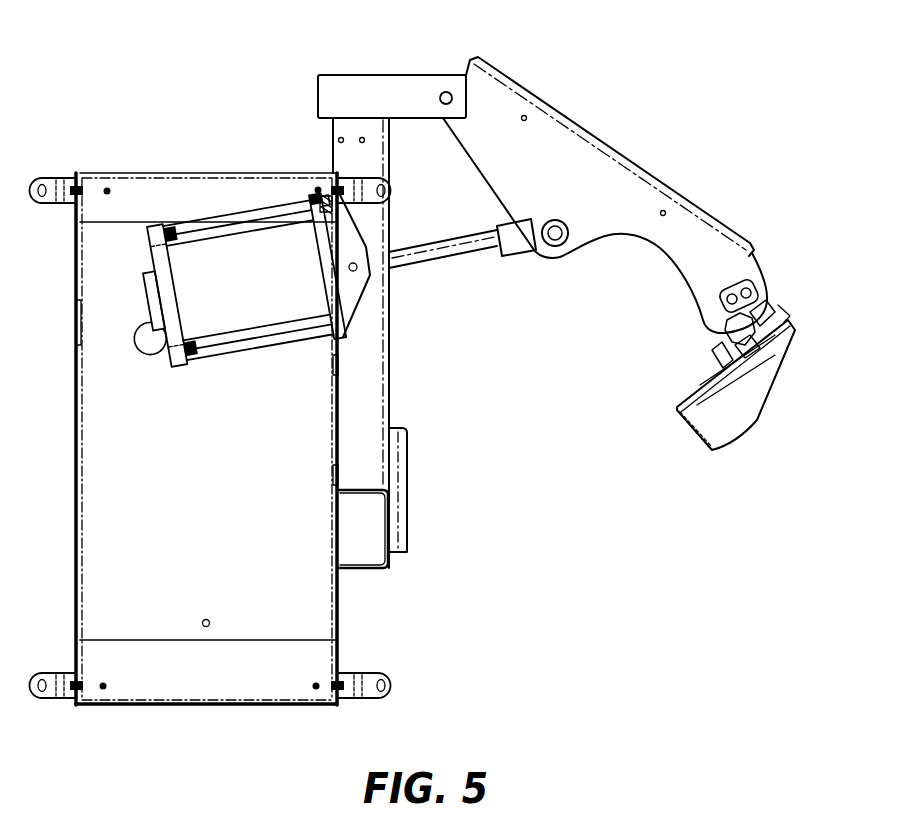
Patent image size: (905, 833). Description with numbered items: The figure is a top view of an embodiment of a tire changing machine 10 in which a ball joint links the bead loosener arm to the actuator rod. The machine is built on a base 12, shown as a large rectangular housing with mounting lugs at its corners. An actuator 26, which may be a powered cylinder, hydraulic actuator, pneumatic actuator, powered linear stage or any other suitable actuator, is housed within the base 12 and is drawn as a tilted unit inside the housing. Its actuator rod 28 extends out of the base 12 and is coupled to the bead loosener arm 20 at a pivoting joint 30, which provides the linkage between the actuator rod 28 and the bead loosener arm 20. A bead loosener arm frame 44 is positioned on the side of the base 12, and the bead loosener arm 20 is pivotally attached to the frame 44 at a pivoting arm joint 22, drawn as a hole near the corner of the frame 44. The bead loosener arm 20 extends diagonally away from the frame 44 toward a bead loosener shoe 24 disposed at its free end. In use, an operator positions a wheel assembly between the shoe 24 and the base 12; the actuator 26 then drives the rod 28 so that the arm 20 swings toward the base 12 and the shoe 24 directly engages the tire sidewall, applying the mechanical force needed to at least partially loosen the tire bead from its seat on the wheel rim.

The tire changing machine 10 is at (184, 90).
The base 12 is at (232, 706).
The bead loosener arm 20 is at (562, 143).
The pivoting arm joint 22 is at (445, 92).
The bead loosener shoe 24 is at (725, 423).
The actuator 26 is at (227, 360).
The actuator rod 28 is at (418, 258).
The pivoting joint 30 is at (537, 260).
The bead loosener arm frame 44 is at (378, 82).